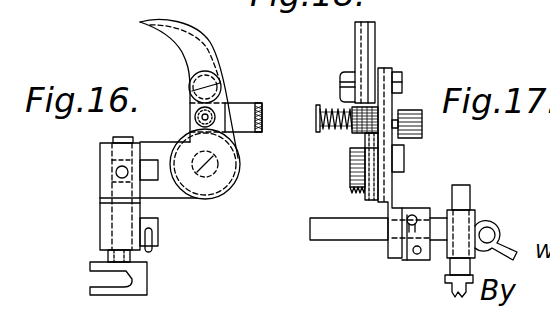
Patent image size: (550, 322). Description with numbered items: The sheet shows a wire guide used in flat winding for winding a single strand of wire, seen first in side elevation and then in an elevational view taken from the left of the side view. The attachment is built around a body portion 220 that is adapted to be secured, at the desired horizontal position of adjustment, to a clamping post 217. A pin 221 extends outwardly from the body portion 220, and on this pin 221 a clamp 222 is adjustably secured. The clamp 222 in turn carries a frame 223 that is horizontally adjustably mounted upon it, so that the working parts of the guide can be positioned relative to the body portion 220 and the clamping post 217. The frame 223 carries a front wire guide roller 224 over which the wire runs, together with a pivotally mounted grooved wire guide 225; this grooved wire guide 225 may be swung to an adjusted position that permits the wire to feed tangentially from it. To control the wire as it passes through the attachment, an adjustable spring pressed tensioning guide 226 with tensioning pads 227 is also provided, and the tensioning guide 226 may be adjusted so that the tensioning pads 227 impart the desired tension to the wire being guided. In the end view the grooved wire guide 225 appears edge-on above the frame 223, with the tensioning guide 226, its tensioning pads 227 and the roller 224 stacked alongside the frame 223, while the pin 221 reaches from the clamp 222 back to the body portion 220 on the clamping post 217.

In FIG. 16, the clamping post 217 is at (107, 257).
In FIG. 17, the clamping post 217 is at (468, 194).
In FIG. 16, the body portion 220 is at (100, 220).
In FIG. 17, the body portion 220 is at (477, 222).
In FIG. 17, the pin 221 is at (352, 230).
In FIG. 17, the clamp 222 is at (400, 252).
In FIG. 16, the frame 223 is at (182, 199).
In FIG. 17, the frame 223 is at (378, 162).
In FIG. 16, the front wire guide roller 224 is at (240, 186).
In FIG. 17, the front wire guide roller 224 is at (357, 190).
In FIG. 16, the grooved wire guide 225 is at (188, 45).
In FIG. 17, the grooved wire guide 225 is at (374, 49).
In FIG. 16, the tensioning guide 226 is at (243, 108).
In FIG. 17, the tensioning guide 226 is at (352, 130).
In FIG. 16, the tensioning pads 227 is at (263, 115).
In FIG. 17, the tensioning pads 227 is at (358, 143).